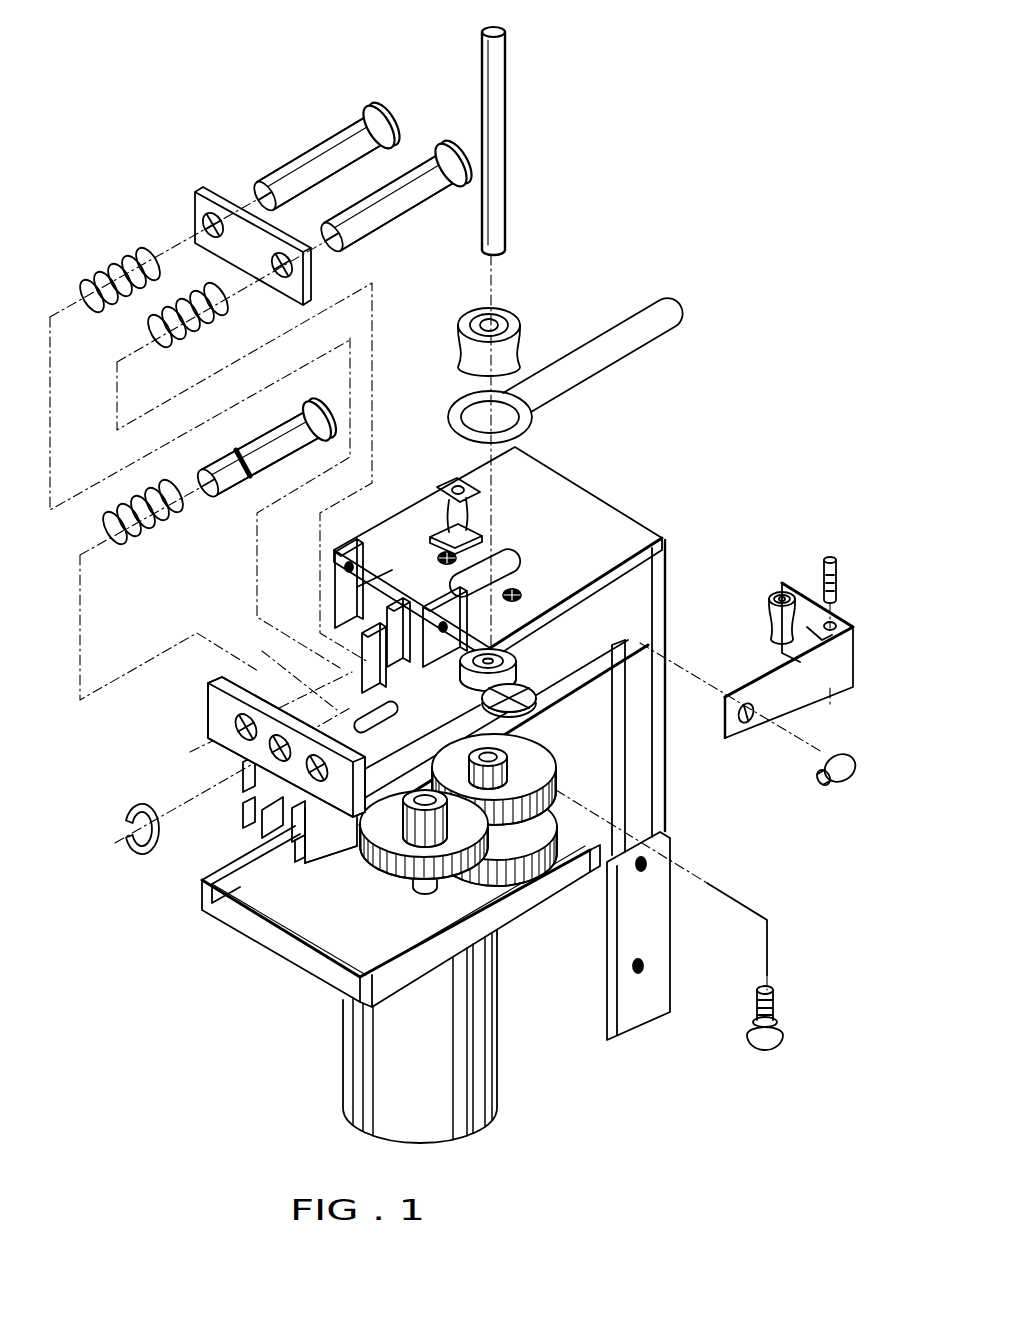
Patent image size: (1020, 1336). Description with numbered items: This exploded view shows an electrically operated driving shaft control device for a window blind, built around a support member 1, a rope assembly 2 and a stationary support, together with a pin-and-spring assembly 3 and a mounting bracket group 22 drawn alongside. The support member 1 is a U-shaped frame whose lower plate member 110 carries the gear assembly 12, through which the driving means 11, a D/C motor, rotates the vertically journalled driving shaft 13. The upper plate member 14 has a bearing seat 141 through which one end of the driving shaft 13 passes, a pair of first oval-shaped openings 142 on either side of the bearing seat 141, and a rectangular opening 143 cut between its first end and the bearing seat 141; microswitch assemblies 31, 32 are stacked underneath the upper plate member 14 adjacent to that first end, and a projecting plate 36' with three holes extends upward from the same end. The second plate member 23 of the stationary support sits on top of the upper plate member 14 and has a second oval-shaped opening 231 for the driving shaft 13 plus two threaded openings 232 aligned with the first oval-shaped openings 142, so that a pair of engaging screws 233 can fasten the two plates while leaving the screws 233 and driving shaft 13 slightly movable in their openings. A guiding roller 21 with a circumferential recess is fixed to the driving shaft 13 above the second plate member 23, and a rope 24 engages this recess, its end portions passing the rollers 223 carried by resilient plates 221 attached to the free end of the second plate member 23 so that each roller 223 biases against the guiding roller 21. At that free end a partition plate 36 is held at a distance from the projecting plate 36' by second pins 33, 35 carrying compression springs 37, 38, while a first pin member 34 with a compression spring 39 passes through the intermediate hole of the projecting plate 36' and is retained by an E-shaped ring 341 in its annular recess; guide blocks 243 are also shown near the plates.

The support member 1 is at (180, 961).
The rope assembly 2 is at (540, 281).
The spring-loaded plate assembly 3 is at (98, 232).
The driving means 11 is at (505, 1012).
The gear assembly 12 is at (562, 771).
The driving shaft 13 is at (507, 90).
The upper plate member 14 is at (588, 637).
The guiding roller 21 is at (520, 322).
The mounting bracket 22 is at (418, 480).
The second plate member 23 is at (667, 603).
The rope 24 is at (605, 368).
The microswitch assembly 31 is at (327, 820).
The microswitch assembly 32 is at (323, 852).
The second pin 33 is at (345, 130).
The first pin member 34 is at (230, 490).
The second pin 35 is at (425, 163).
The partition plate 36 is at (253, 220).
The projecting plate 36' is at (256, 747).
The compression spring 37 is at (130, 243).
The compression spring 38 is at (148, 540).
The compression spring 39 is at (212, 325).
The lower plate member 110 is at (300, 970).
The bearing seat 141 is at (517, 657).
The first oval-shaped opening 142 is at (483, 703).
The rectangular opening 143 is at (380, 722).
The resilient plate 221 is at (790, 698).
The roller 223 is at (770, 603).
The second oval-shaped opening 231 is at (506, 564).
The threaded opening 232 is at (443, 553).
The engaging screw 233 is at (780, 1000).
The guide block 243 is at (393, 600).
The E-shaped ring 341 is at (140, 806).